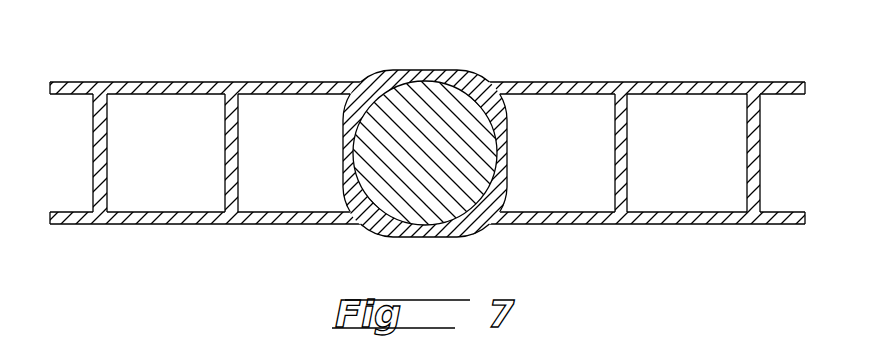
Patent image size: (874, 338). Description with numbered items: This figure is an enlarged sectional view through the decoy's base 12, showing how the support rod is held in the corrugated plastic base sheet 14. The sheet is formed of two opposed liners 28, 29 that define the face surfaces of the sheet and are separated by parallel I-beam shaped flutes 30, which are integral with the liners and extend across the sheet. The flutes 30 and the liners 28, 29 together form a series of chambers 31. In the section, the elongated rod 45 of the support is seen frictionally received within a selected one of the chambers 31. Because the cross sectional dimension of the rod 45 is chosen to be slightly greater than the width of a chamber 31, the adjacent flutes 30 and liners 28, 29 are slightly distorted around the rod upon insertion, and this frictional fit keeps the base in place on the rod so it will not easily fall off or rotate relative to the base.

The base 12 is at (427, 141).
The base sheet 14 is at (703, 80).
The liner 29 is at (642, 223).
The liner 28 is at (615, 80).
The flutes 30 is at (228, 140).
The chambers 31 is at (68, 183).
The elongated rod 45 is at (427, 117).